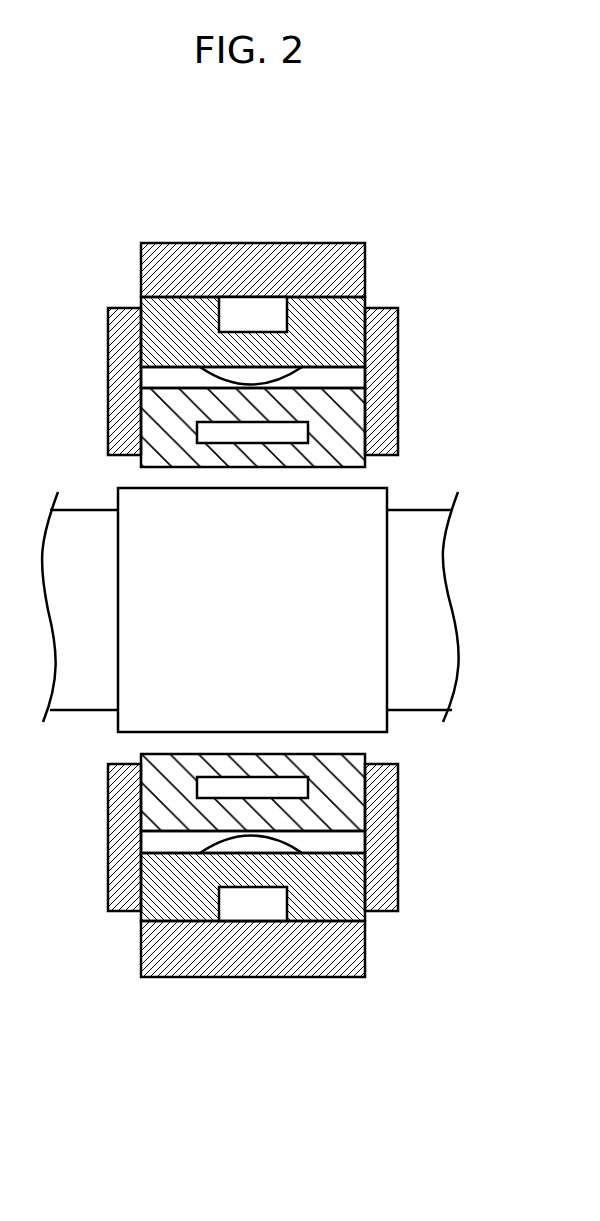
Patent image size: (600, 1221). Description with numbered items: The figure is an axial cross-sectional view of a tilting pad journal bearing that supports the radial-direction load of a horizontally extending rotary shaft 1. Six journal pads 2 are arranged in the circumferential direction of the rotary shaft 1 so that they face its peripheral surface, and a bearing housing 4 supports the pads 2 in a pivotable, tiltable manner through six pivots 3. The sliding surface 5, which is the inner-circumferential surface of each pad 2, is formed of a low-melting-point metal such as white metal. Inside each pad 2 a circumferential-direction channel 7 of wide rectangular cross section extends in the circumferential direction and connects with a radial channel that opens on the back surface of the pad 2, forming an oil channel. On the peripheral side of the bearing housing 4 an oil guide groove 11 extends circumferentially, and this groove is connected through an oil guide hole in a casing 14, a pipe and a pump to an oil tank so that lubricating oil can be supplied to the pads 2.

The rotary shaft 1 is at (246, 612).
The journal pad 2 is at (210, 403).
The pivot 3 is at (243, 372).
The bearing housing 4 is at (300, 307).
The sliding surface 5 is at (330, 467).
The circumferential-direction channel 7 is at (245, 790).
The oil guide groove 11 is at (263, 912).
The casing 14 is at (340, 250).